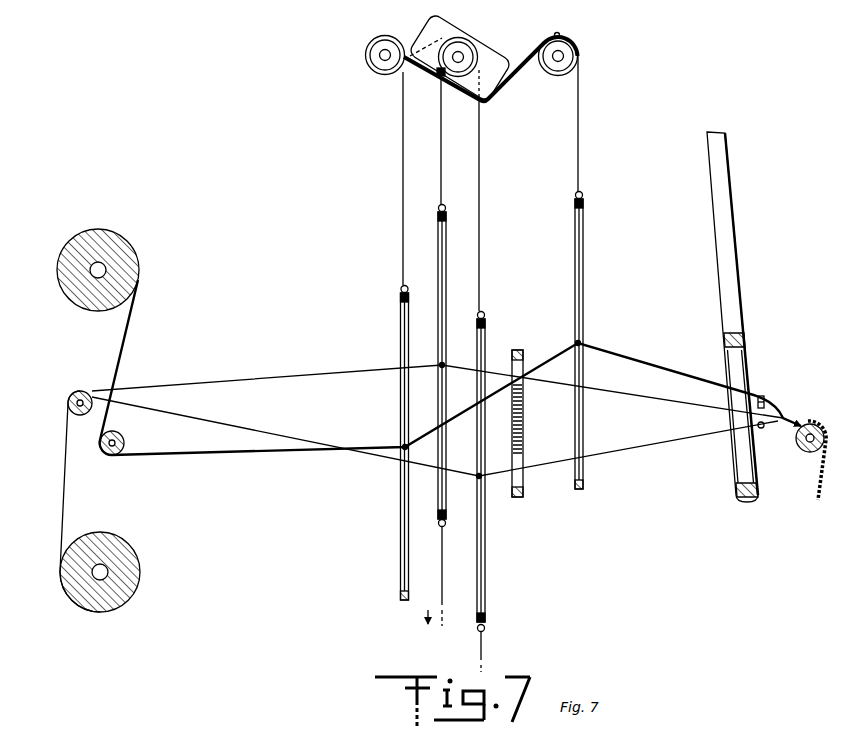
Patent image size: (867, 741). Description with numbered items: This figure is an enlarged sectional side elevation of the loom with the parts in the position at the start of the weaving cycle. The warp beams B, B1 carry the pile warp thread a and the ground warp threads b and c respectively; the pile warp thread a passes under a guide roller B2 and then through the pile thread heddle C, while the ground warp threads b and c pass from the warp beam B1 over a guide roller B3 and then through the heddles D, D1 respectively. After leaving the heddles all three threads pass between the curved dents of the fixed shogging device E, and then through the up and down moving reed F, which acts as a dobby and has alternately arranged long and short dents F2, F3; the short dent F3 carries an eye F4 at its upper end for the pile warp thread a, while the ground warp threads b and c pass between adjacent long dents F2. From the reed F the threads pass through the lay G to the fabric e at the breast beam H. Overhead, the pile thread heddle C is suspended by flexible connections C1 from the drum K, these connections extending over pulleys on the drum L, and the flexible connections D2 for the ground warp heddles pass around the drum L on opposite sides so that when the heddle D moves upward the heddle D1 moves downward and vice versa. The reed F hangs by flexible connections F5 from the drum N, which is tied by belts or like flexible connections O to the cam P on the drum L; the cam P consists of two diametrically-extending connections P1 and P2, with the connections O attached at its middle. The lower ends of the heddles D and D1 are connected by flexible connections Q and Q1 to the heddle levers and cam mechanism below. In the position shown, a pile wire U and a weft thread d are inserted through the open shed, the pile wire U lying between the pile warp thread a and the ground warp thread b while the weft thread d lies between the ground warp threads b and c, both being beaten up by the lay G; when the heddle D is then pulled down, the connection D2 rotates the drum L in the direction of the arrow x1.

The drum K is at (372, 53).
The cam P is at (467, 52).
The diametrically-extending connection P1 is at (500, 62).
The diametrically-extending connection P2 is at (437, 28).
The drum L is at (465, 36).
The drum N is at (578, 56).
The flexible connections O is at (491, 114).
The arrow x1 is at (447, 94).
The flexible connections C1 is at (410, 68).
The flexible connections D2 is at (442, 175).
The flexible connections F5 is at (579, 156).
The heddle C is at (400, 328).
The heddle D is at (446, 311).
The heddle D1 is at (485, 328).
The reed F is at (586, 341).
The long dent F2 is at (580, 260).
The short dent F3 is at (583, 432).
The eye F4 is at (584, 347).
The shogging device E is at (527, 423).
The lay G is at (744, 340).
The warp beam B is at (137, 268).
The warp beam B1 is at (138, 576).
The guide roller B2 is at (125, 443).
The guide roller B3 is at (82, 392).
The pile warp thread a is at (682, 372).
The ground warp thread b is at (308, 378).
The ground warp thread c is at (262, 436).
The pile wire U is at (766, 402).
The weft thread d is at (761, 430).
The breast beam H is at (803, 453).
The fabric e is at (822, 428).
The flexible connection Q is at (441, 575).
The flexible connection Q1 is at (483, 654).